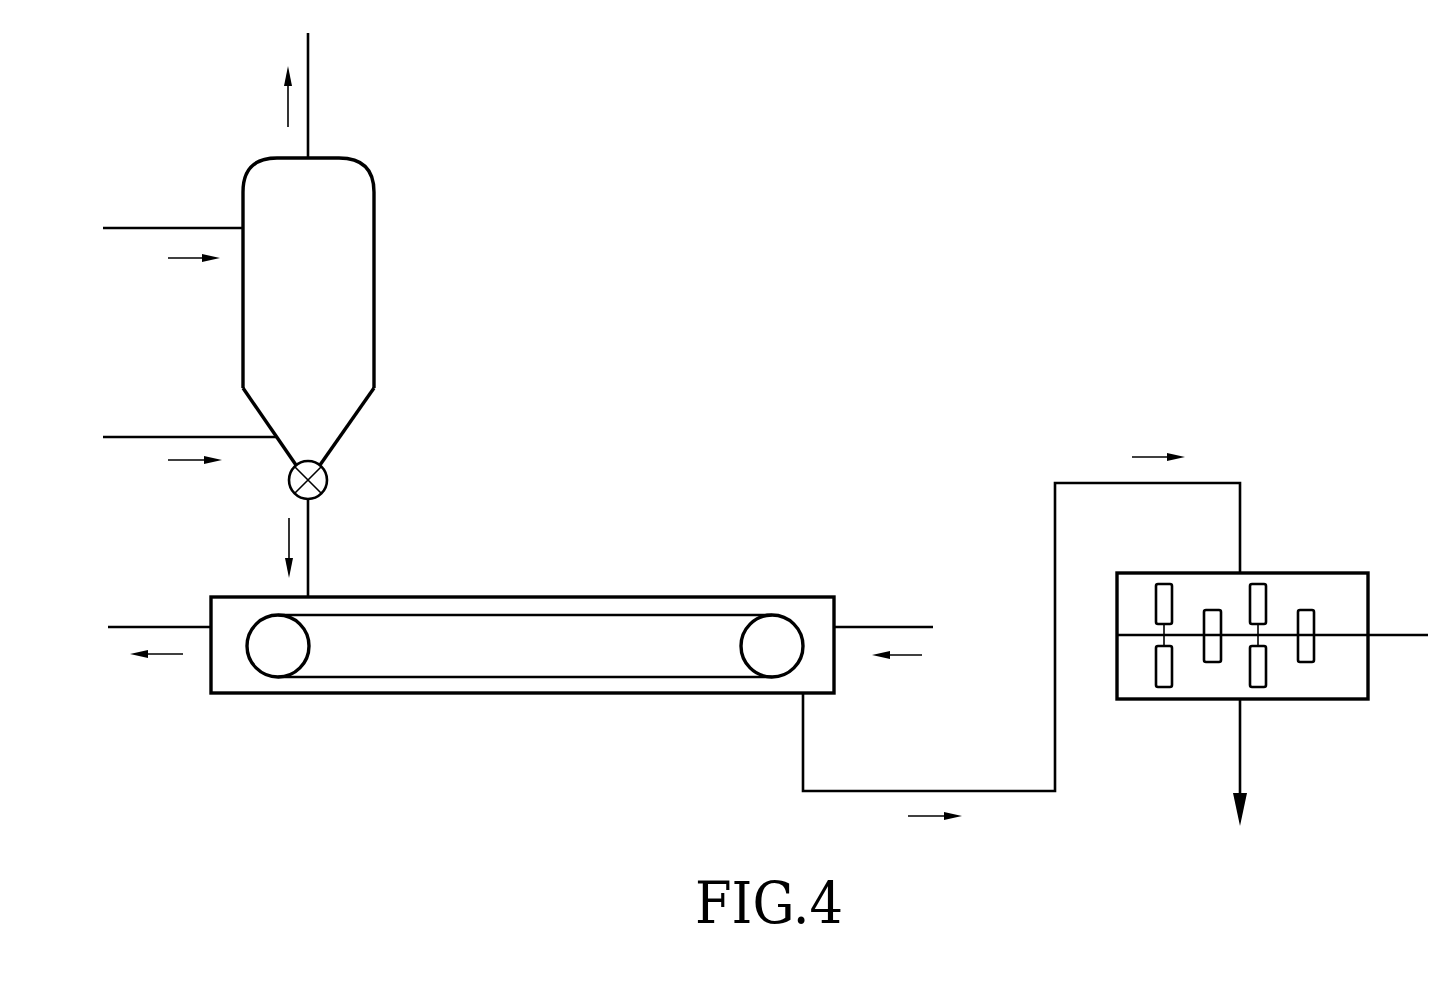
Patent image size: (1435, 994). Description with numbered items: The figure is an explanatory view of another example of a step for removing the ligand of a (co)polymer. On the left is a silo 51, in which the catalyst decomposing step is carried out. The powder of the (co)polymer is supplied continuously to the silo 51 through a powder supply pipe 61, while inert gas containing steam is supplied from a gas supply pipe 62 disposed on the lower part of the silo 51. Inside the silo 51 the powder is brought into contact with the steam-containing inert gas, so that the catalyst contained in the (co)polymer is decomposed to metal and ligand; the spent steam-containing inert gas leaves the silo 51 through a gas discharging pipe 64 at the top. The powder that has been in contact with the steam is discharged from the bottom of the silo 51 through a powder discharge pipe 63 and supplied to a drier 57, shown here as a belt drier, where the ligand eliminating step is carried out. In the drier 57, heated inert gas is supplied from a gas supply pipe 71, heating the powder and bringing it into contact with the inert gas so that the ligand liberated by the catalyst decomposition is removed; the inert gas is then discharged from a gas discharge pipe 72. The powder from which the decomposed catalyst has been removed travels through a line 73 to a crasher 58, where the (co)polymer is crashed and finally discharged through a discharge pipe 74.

The silo 51 is at (350, 258).
The drier 57 is at (560, 599).
The crasher 58 is at (1342, 592).
The powder supply pipe 61 is at (165, 228).
The gas supply pipe 62 is at (170, 437).
The powder discharge pipe 63 is at (308, 545).
The gas discharging pipe 64 is at (308, 97).
The gas supply pipe 71 is at (898, 627).
The gas discharge pipe 72 is at (161, 627).
The line 73 is at (803, 768).
The discharge pipe 74 is at (1240, 757).